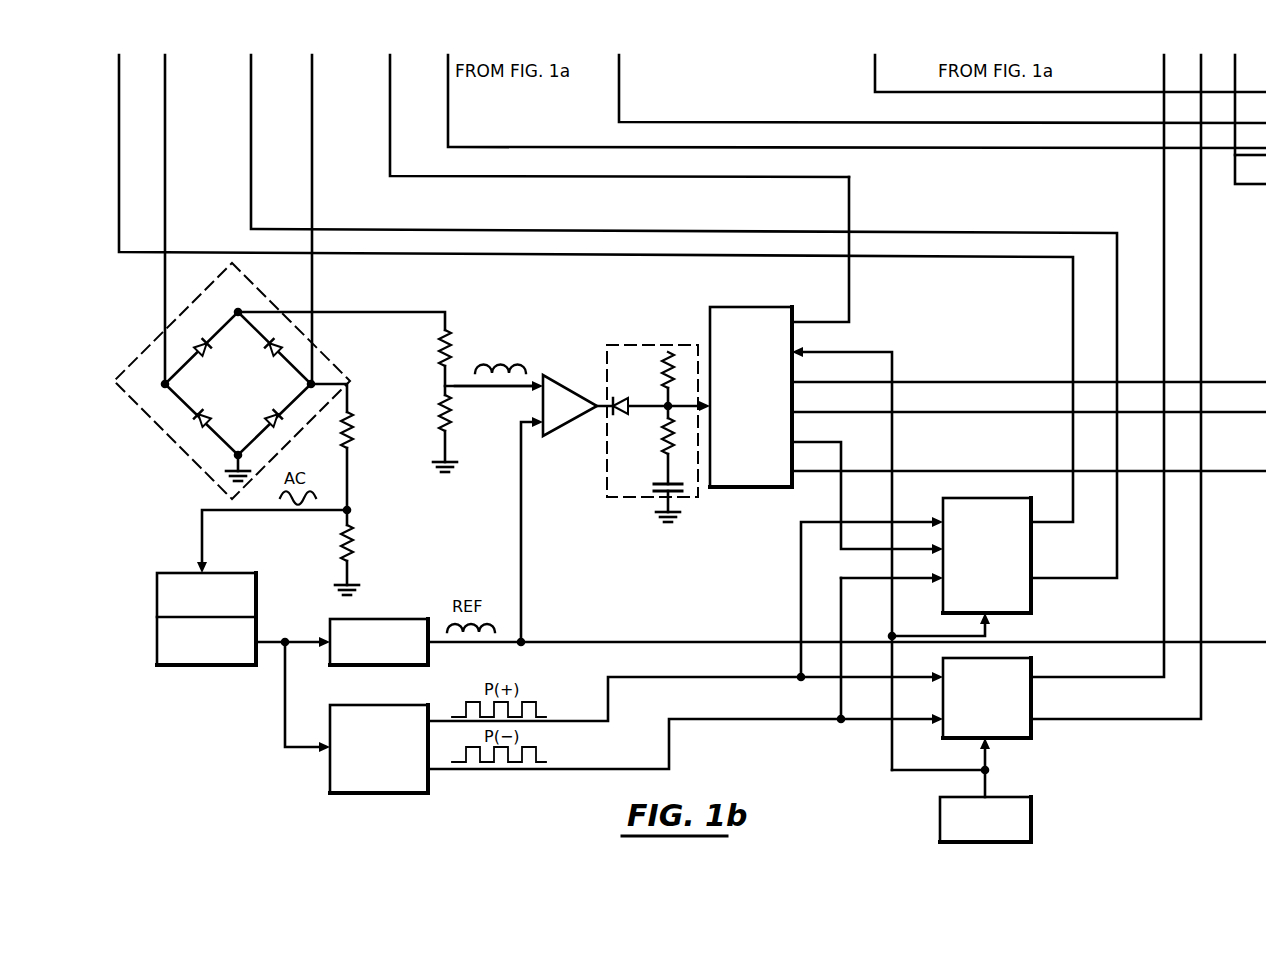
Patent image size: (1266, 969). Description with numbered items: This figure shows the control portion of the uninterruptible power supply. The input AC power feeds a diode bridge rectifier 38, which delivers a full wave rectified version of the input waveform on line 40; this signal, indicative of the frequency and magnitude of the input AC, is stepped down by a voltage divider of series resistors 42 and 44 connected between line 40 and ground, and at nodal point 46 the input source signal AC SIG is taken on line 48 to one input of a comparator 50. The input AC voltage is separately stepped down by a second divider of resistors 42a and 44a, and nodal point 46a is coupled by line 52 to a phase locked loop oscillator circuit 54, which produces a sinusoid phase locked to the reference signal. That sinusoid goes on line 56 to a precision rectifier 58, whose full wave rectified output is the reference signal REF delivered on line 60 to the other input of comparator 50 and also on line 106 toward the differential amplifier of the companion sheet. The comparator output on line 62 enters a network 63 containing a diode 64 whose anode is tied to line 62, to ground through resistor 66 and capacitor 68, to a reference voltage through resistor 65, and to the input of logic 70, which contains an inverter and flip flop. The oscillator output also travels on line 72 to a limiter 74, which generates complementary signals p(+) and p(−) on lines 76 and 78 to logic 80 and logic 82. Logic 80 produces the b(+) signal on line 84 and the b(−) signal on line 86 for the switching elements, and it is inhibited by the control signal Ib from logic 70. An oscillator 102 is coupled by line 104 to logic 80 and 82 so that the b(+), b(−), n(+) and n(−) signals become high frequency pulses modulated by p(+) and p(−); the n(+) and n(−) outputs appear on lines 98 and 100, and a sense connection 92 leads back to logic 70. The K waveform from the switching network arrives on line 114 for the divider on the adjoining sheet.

The diode bridge rectifier 38 is at (157, 336).
The line 40 is at (402, 312).
The resistor 42 is at (438, 358).
The resistor 44 is at (438, 426).
The nodal point 46 is at (438, 393).
The line 48 is at (503, 389).
The comparator 50 is at (566, 352).
The line 60 is at (533, 593).
The line 62 is at (602, 396).
The network 63 is at (623, 343).
The diode 64 is at (640, 385).
The resistor 65 is at (658, 368).
The resistor 66 is at (658, 443).
The capacitor 68 is at (656, 484).
The logic 70 is at (735, 308).
The sense line SN 92 is at (850, 309).
The resistor 42a is at (354, 440).
The resistor 44a is at (354, 547).
The nodal point 46a is at (354, 510).
The line 52 is at (195, 515).
The phase locked loop oscillator circuit 54 is at (232, 572).
The line 56 is at (312, 637).
The precision rectifier 58 is at (418, 617).
The line 72 is at (282, 737).
The limiter 74 is at (414, 704).
The line 76 is at (595, 717).
The line 78 is at (612, 769).
The logic 80 is at (1017, 500).
The logic 82 is at (1033, 738).
The line 84 is at (837, 500).
The line 86 is at (1089, 583).
The n(+) signal line 98 is at (1093, 677).
The n(-) signal line 100 is at (1097, 720).
The oscillator 102 is at (1033, 797).
The line 104 is at (987, 782).
The line 106 is at (697, 641).
The line 114 is at (1250, 119).